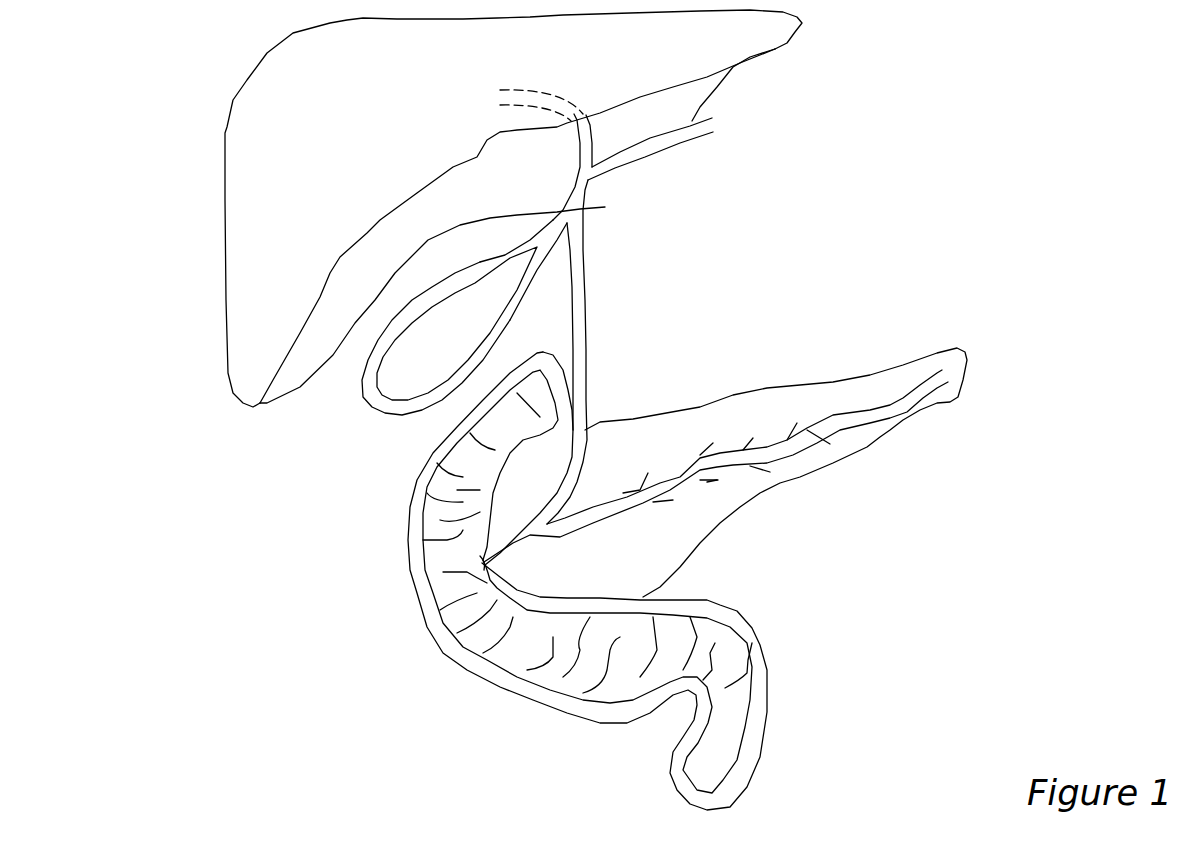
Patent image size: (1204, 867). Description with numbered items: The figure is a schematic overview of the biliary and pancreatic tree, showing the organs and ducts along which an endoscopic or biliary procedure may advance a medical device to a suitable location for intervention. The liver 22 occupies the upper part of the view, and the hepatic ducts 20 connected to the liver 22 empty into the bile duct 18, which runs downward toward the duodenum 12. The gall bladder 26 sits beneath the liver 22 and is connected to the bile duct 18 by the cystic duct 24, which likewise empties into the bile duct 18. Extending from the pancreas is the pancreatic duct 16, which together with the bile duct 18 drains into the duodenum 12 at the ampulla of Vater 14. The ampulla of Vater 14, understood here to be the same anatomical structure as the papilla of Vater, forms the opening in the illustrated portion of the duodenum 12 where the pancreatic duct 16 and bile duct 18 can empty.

The duodenum 12 is at (415, 641).
The ampulla of Vater 14 is at (468, 559).
The pancreatic duct 16 is at (677, 487).
The bile duct 18 is at (580, 347).
The hepatic ducts 20 is at (588, 178).
The liver 22 is at (267, 105).
The cystic duct 24 is at (547, 233).
The gall bladder 26 is at (398, 373).